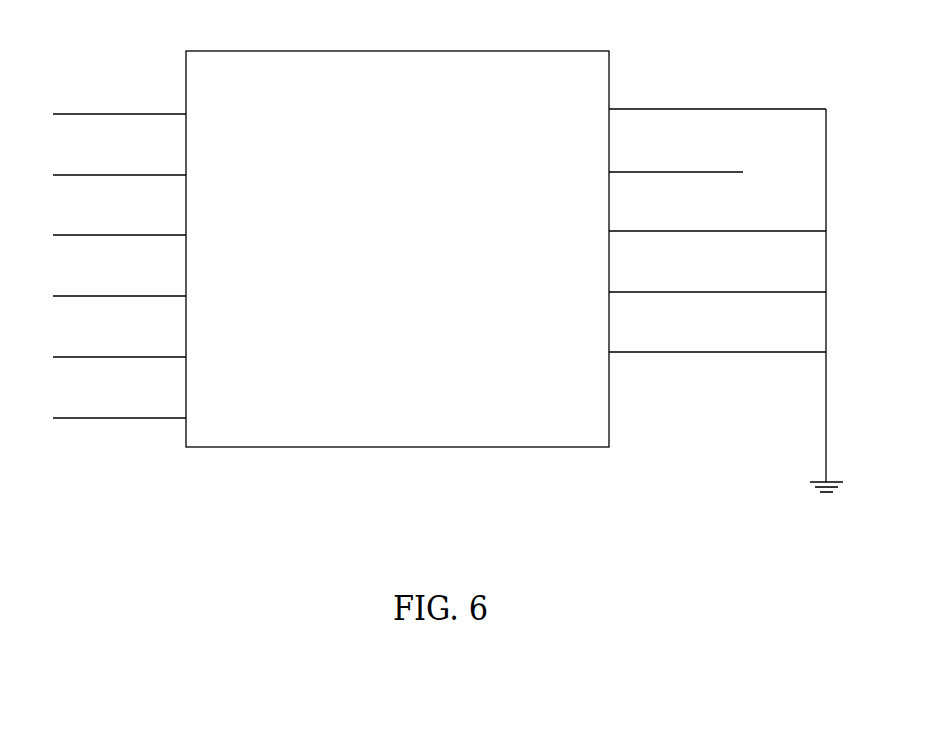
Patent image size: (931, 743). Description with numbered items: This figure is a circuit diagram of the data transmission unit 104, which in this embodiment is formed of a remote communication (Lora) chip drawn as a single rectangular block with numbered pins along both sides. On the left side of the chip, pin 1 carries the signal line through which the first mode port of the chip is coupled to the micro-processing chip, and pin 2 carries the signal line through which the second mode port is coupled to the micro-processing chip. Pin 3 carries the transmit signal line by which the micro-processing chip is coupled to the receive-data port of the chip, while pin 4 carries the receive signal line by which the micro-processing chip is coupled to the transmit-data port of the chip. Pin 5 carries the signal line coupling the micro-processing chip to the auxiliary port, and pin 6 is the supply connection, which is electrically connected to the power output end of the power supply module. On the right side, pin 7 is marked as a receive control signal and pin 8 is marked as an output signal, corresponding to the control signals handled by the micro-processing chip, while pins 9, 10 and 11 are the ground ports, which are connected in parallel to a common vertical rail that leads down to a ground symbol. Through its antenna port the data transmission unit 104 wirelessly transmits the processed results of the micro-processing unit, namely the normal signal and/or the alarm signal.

The data transmission unit 104 is at (97, 46).
The pin 1 (P3.3) 1 is at (119, 103).
The pin 2 (P3.4) 2 is at (119, 163).
The pin 3 (TX1) 3 is at (119, 223).
The pin 4 (RX1) 4 is at (119, 284).
The pin 5 (P3.5) 5 is at (119, 345).
The pin 6 (VOUT) 6 is at (119, 406).
The pin 7 (RX) 7 is at (717, 95).
The pin 8 (OUT) 8 is at (681, 157).
The pin 9 (ground) 9 is at (717, 216).
The pin 10 (ground) 10 is at (717, 277).
The pin 11 (ground) 11 is at (717, 337).